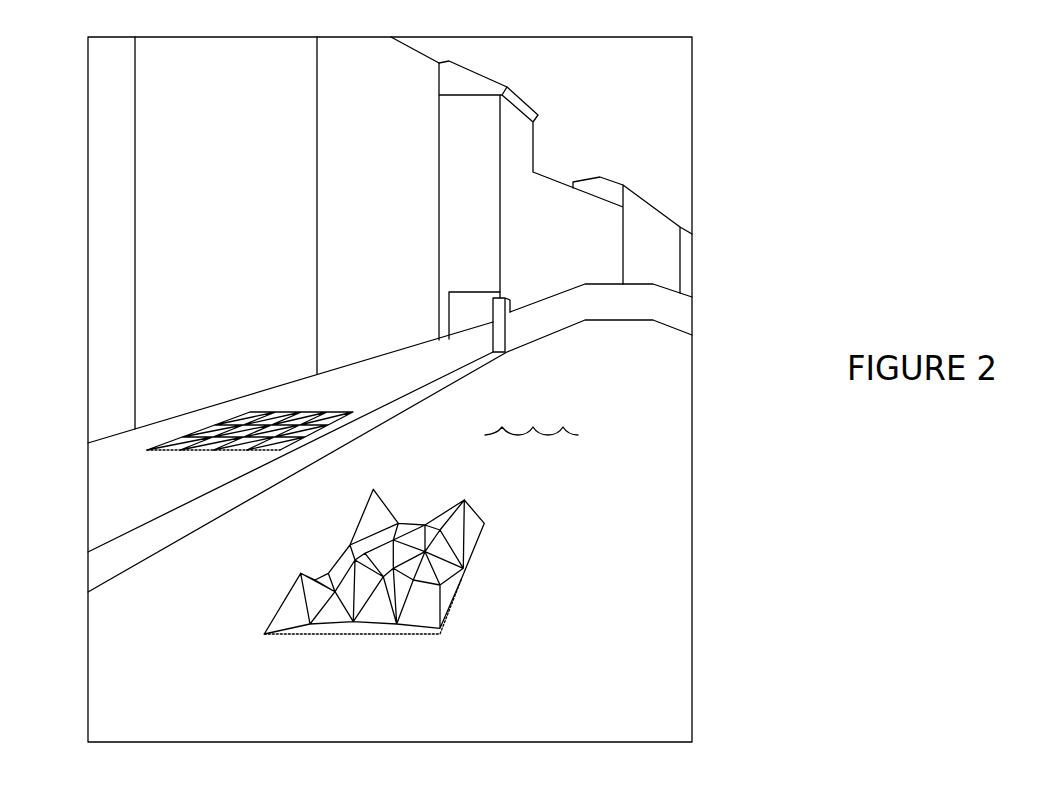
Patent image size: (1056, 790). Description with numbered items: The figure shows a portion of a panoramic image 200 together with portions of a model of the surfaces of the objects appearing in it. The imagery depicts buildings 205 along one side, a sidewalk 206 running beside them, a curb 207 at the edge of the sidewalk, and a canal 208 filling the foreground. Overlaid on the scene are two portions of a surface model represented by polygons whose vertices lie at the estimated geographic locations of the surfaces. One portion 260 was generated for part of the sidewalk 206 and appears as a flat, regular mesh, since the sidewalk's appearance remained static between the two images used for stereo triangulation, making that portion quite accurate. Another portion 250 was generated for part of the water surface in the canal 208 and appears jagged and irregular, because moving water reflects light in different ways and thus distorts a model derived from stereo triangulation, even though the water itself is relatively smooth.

The panoramic image 200 is at (87, 55).
The buildings 205 is at (117, 124).
The sidewalk 206 is at (120, 518).
The curb 207 is at (112, 565).
The canal 208 is at (120, 725).
The canal portion of model 250 is at (248, 653).
The sidewalk portion of model 260 is at (150, 462).